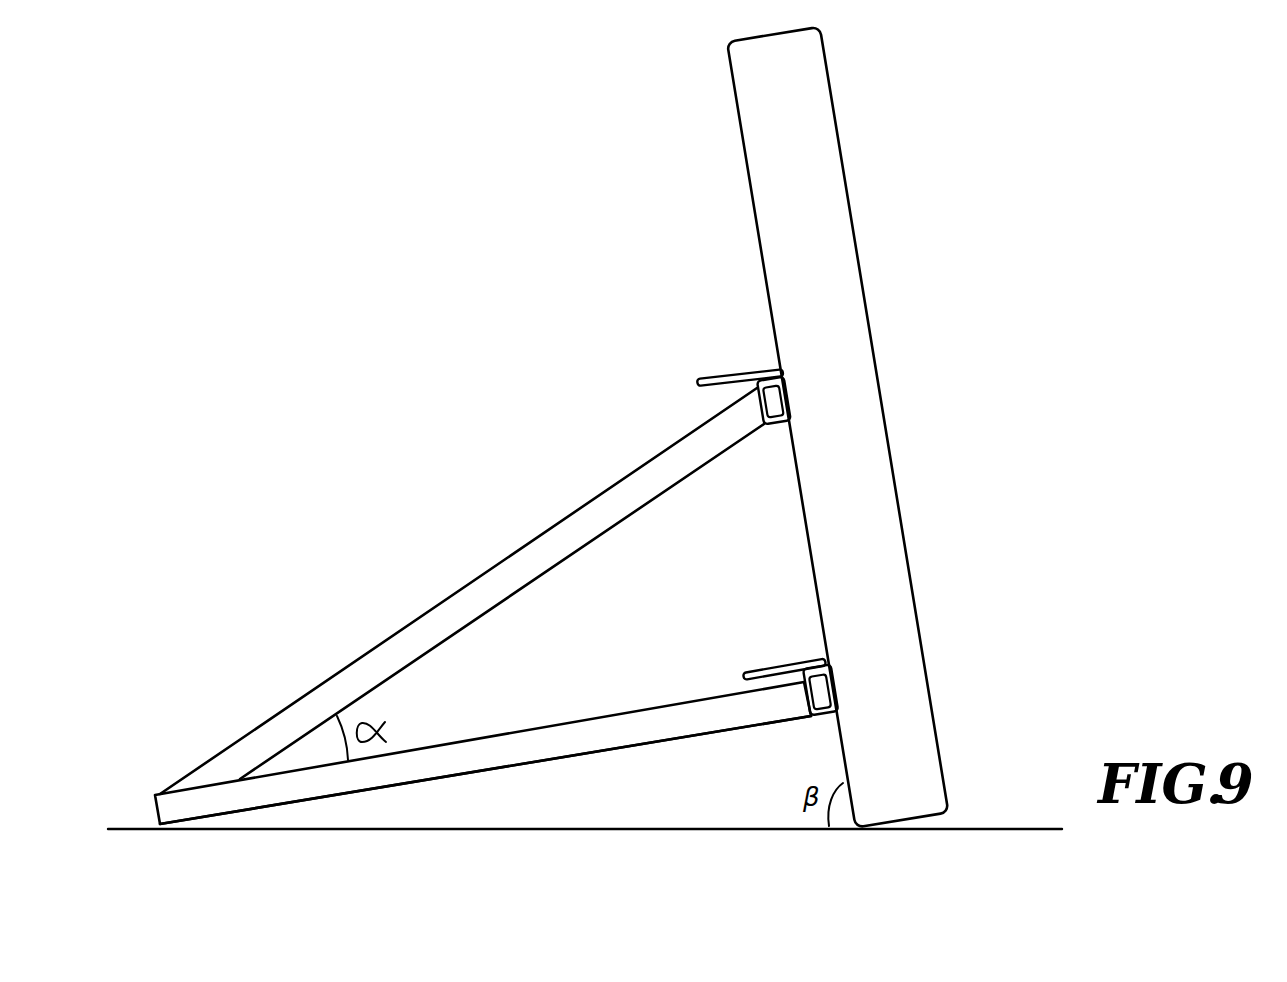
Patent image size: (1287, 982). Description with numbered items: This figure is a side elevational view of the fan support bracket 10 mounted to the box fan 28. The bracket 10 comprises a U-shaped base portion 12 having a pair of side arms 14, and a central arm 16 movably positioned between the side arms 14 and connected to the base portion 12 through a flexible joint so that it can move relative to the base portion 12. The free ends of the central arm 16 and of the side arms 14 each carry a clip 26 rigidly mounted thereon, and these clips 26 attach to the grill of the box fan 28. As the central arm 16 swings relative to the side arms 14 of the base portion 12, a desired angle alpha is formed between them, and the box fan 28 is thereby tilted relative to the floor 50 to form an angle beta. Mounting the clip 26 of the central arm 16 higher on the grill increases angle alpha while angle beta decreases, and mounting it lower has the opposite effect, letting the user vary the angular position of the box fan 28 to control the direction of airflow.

The fan support bracket 10 is at (496, 596).
The U-shaped base portion 12 is at (435, 782).
The side arms 14 is at (552, 760).
The central arm 16 is at (510, 578).
The clip 26 is at (773, 428).
The box fan 28 is at (797, 98).
The floor 50 is at (722, 829).